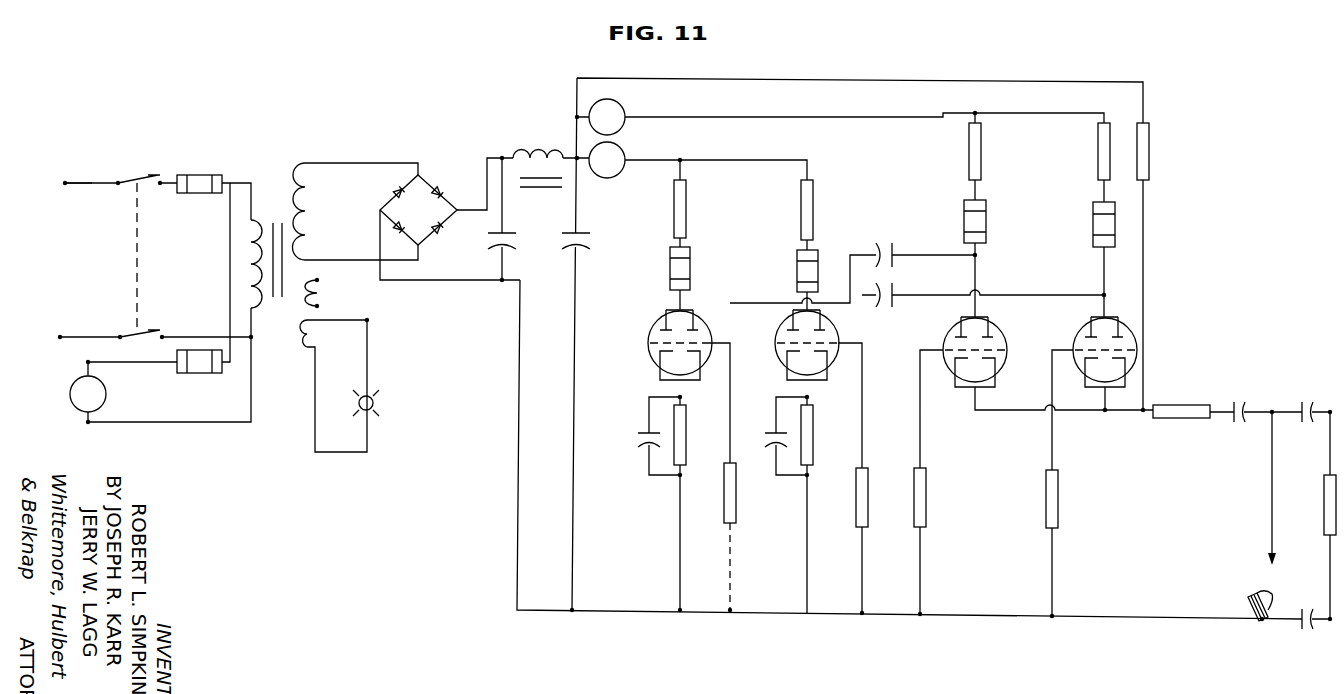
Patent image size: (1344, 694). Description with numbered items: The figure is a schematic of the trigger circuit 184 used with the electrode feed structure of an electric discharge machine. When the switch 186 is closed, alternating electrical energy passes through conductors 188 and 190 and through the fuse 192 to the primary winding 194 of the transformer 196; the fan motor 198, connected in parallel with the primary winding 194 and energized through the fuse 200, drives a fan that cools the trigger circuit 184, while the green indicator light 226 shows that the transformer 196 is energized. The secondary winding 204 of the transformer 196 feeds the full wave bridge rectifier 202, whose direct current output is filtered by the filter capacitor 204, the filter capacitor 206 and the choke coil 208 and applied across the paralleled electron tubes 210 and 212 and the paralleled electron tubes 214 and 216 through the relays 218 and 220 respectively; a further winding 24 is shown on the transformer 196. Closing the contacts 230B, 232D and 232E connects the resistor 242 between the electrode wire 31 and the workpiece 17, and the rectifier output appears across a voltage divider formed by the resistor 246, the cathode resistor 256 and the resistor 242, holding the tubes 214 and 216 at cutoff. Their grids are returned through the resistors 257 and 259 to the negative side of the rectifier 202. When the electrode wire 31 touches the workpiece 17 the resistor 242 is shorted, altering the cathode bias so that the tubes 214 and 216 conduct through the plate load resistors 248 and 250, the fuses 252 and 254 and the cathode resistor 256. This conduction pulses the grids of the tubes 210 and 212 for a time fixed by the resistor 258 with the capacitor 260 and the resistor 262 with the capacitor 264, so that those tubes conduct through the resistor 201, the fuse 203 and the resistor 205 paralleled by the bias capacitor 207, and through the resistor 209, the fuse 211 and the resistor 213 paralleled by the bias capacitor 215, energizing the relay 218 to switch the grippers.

The switch 186 is at (157, 174).
The conductor 188 is at (76, 186).
The conductor 190 is at (103, 333).
The fuse 192 is at (222, 174).
The primary winding 194 is at (251, 258).
The transformer 196 is at (293, 172).
The fan motor 198 is at (76, 408).
The fuse 200 is at (192, 374).
The full wave bridge rectifier 202 is at (425, 173).
The secondary winding / filter capacitor 204 is at (307, 214).
The winding 24 is at (318, 293).
The green indicator light 226 is at (301, 350).
The choke coil 208 is at (553, 153).
The filter capacitor 206 is at (588, 232).
The relay 220 is at (620, 108).
The relay 218 is at (620, 148).
The resistor 201 is at (688, 227).
The fuse 203 is at (670, 266).
The resistor 209 is at (815, 218).
The fuse 211 is at (797, 265).
The electron tube 210 is at (656, 324).
The electron tube 212 is at (783, 325).
The electron tube 214 is at (997, 328).
The electron tube 216 is at (1133, 332).
The bias capacitor 207 is at (642, 432).
The resistor 205 is at (685, 452).
The bias capacitor 215 is at (776, 432).
The resistor 213 is at (814, 432).
The resistor 258 is at (735, 515).
The resistor 262 is at (858, 507).
The resistor 257 is at (926, 478).
The resistor 259 is at (1058, 478).
The capacitor 260 is at (893, 250).
The capacitor 264 is at (893, 293).
The plate load resistor 248 is at (969, 140).
The plate load resistor 250 is at (1098, 140).
The resistor 246 is at (1149, 145).
The fuse 252 is at (986, 238).
The fuse 254 is at (1093, 210).
The cathode resistor 256 is at (1175, 405).
The normally open contacts 230B is at (1258, 390).
The normally open contacts 232D is at (1313, 404).
The resistor 242 is at (1326, 475).
The electrode wire 31 is at (1272, 512).
The workpiece 17 is at (1252, 595).
The normally open contacts 232E is at (1302, 625).
The trigger circuit 184 is at (517, 515).